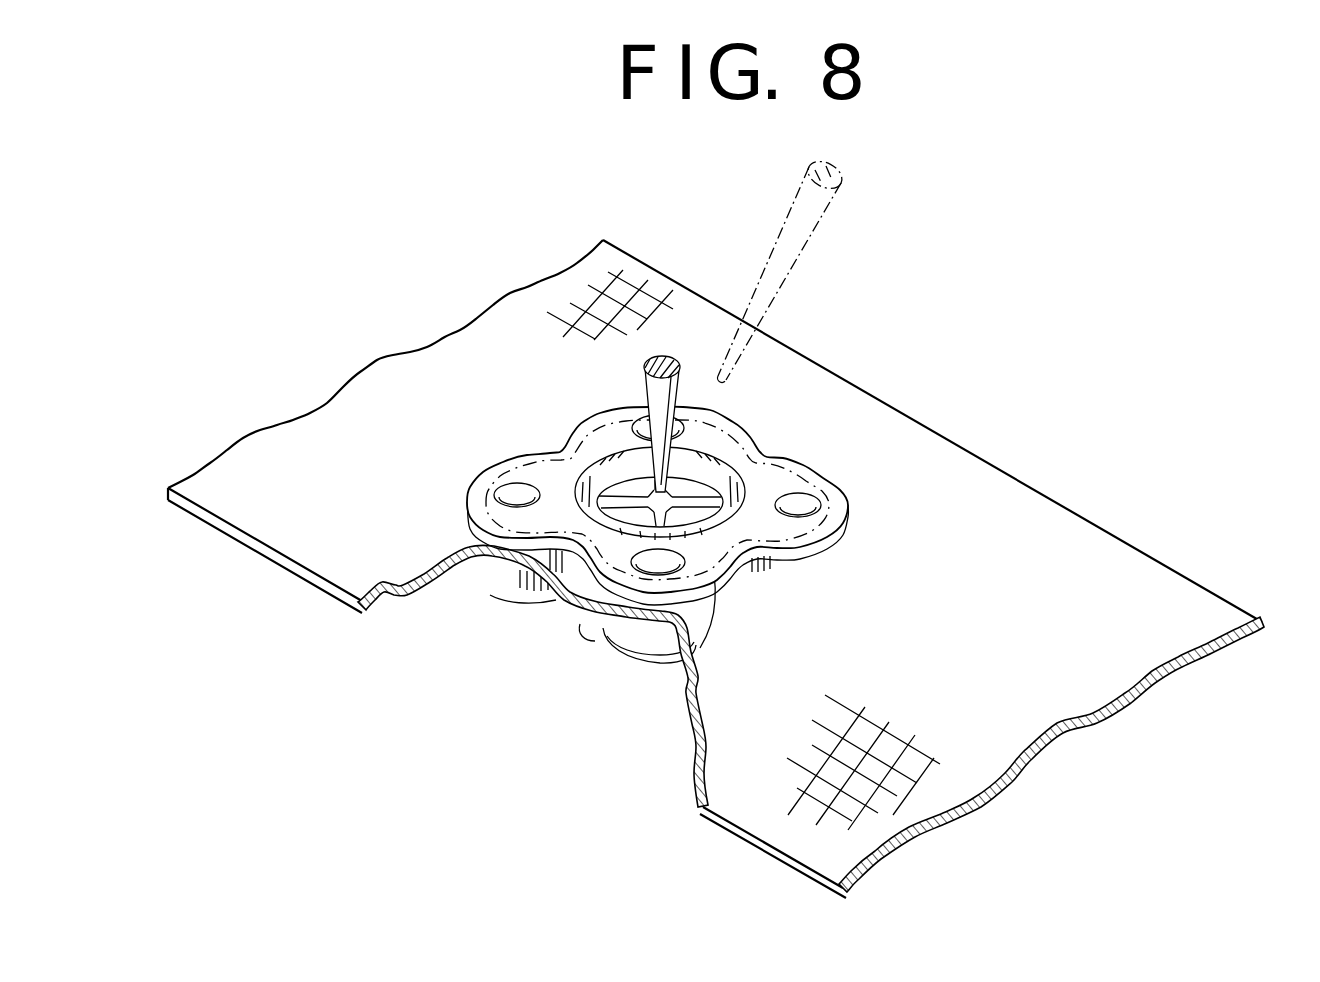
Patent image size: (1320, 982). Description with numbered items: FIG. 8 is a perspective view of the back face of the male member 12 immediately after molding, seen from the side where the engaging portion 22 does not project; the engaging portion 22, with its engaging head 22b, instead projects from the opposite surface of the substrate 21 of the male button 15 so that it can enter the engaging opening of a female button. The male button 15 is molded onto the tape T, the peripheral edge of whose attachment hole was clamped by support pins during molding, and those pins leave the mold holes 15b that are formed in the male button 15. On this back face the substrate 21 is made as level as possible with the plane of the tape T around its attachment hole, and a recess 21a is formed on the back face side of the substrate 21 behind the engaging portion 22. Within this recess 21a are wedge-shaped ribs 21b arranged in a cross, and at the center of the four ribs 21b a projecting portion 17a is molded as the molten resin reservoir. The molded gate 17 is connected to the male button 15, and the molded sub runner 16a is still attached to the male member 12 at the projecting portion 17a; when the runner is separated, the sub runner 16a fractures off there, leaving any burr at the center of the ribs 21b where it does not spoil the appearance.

The male member 12 is at (1110, 540).
The tape T is at (970, 737).
The male button 15 is at (851, 490).
The mold holes 15b is at (823, 511).
The sub runner 16a is at (665, 388).
The molded gate 17 is at (627, 500).
The projecting portion 17a is at (688, 495).
The substrate 21 is at (594, 535).
The recess 21a is at (700, 648).
The wedge-shaped ribs 21b is at (725, 468).
The engaging portion 22 is at (603, 645).
The engaging head 22b is at (612, 658).